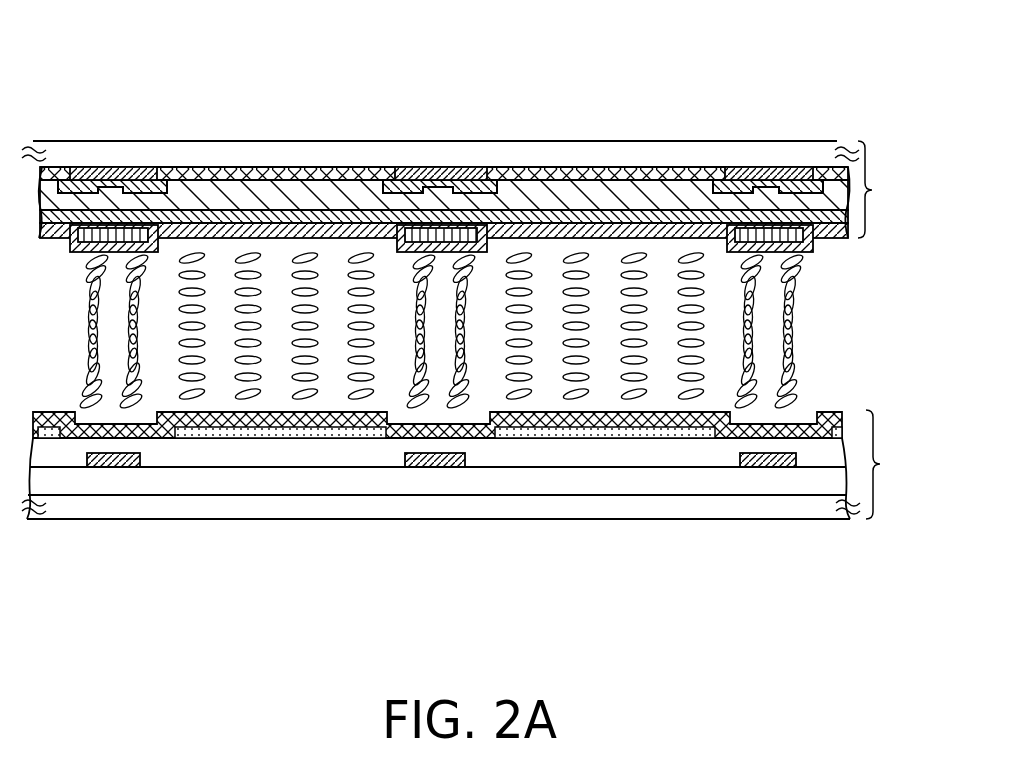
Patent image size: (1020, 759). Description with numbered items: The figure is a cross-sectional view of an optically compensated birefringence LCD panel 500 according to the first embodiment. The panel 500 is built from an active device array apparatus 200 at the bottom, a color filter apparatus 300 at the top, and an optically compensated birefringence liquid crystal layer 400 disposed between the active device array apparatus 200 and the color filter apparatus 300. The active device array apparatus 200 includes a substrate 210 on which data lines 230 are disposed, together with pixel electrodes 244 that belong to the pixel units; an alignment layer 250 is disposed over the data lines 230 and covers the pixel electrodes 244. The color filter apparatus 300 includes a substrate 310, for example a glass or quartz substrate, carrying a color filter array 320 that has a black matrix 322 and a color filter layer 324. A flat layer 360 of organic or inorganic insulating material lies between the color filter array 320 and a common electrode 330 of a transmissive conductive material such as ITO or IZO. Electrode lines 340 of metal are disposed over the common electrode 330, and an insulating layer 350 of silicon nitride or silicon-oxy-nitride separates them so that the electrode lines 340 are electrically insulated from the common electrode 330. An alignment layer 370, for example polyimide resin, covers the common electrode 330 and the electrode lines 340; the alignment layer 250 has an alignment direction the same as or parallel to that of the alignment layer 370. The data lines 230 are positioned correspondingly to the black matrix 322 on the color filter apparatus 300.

The active device array apparatus 200 is at (897, 464).
The substrate 210 is at (122, 510).
The data lines 230 is at (142, 457).
The pixel electrode 244 is at (288, 433).
The alignment layer 250 is at (357, 423).
The color filter apparatus 300 is at (482, 189).
The substrate 310 is at (108, 152).
The color filter array 320 is at (441, 134).
The black matrix 322 is at (418, 233).
The color filter layer 324 is at (508, 173).
The common electrode 330 is at (205, 215).
The electrode lines 340 is at (405, 176).
The insulating layer 350 is at (772, 224).
The flat layer 360 is at (612, 188).
The alignment layer 370 is at (275, 222).
The optically compensated birefringence liquid crystal layer 400 is at (780, 305).
The optically compensated birefringence LCD panel 500 is at (850, 597).